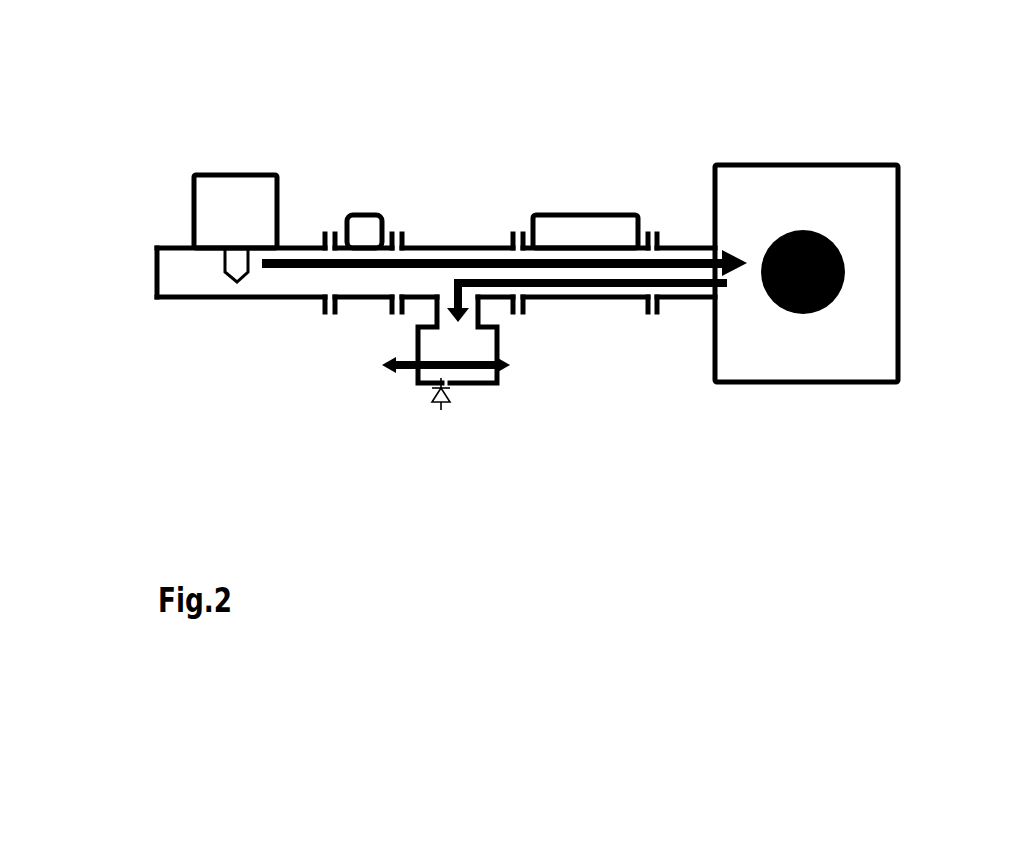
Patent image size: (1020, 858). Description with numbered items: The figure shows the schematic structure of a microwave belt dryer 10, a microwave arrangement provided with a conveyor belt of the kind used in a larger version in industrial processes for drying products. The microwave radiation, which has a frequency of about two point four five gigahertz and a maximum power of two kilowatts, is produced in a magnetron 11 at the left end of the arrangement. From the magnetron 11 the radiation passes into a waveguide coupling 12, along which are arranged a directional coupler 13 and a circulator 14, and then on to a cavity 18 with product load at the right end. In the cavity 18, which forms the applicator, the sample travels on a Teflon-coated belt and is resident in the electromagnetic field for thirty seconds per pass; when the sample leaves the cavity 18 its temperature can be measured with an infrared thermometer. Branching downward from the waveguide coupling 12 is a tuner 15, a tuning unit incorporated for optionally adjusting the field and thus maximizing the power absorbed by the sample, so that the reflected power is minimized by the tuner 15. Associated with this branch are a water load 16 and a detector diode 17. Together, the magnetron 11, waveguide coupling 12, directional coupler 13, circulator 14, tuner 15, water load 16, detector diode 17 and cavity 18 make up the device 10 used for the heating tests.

The microwave belt dryer 10 is at (324, 72).
The magnetron 11 is at (216, 198).
The waveguide coupling 12 is at (153, 277).
The directional coupler 13 is at (362, 230).
The circulator 14 is at (456, 232).
The tuner 15 is at (580, 242).
The water load 16 is at (427, 340).
The detector diode 17 is at (435, 407).
The cavity 18 is at (778, 188).